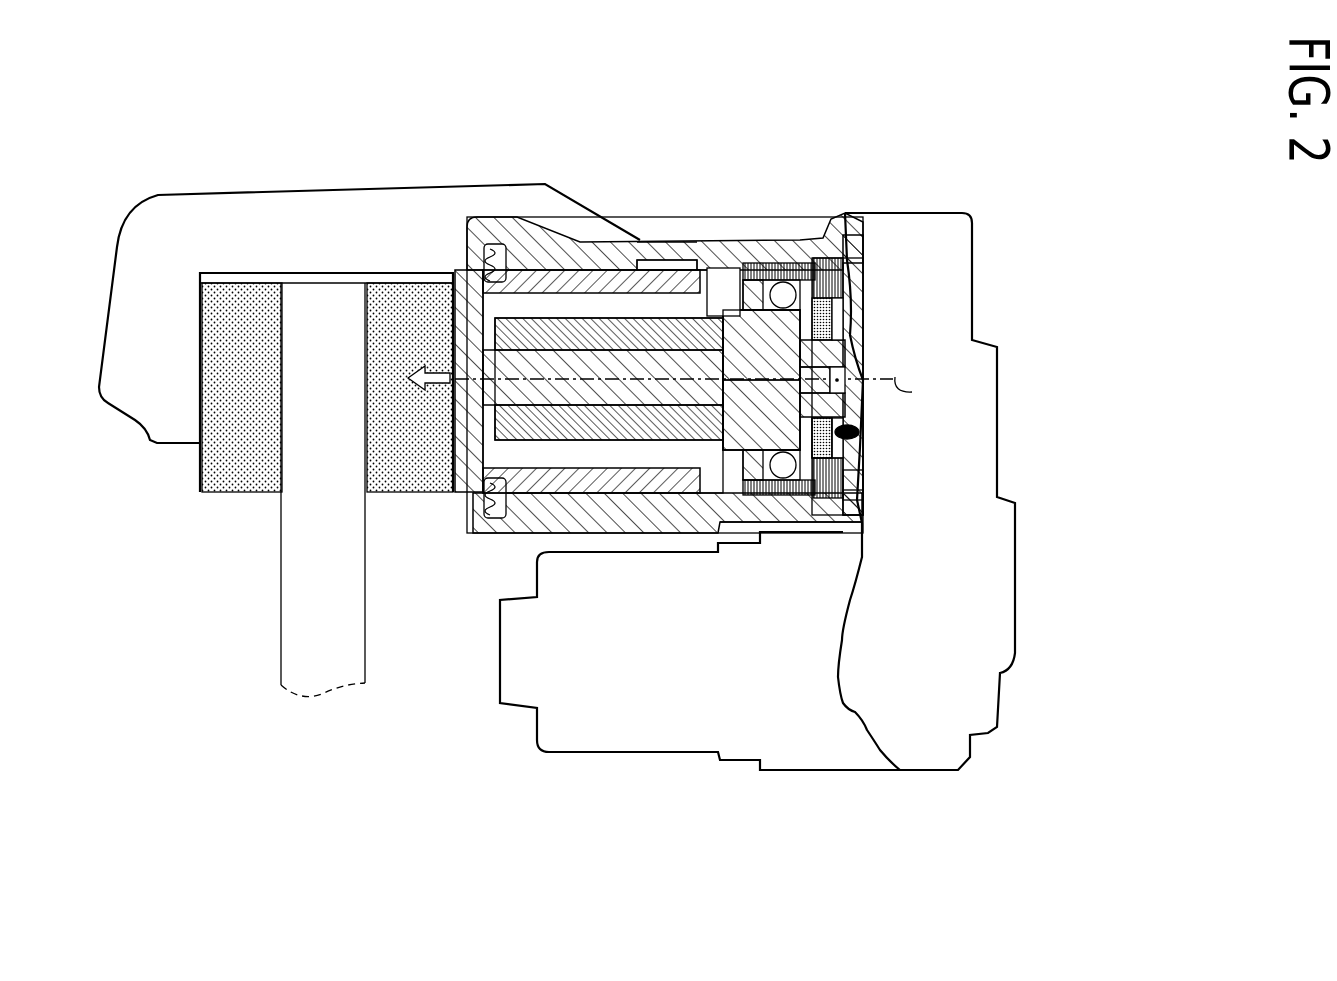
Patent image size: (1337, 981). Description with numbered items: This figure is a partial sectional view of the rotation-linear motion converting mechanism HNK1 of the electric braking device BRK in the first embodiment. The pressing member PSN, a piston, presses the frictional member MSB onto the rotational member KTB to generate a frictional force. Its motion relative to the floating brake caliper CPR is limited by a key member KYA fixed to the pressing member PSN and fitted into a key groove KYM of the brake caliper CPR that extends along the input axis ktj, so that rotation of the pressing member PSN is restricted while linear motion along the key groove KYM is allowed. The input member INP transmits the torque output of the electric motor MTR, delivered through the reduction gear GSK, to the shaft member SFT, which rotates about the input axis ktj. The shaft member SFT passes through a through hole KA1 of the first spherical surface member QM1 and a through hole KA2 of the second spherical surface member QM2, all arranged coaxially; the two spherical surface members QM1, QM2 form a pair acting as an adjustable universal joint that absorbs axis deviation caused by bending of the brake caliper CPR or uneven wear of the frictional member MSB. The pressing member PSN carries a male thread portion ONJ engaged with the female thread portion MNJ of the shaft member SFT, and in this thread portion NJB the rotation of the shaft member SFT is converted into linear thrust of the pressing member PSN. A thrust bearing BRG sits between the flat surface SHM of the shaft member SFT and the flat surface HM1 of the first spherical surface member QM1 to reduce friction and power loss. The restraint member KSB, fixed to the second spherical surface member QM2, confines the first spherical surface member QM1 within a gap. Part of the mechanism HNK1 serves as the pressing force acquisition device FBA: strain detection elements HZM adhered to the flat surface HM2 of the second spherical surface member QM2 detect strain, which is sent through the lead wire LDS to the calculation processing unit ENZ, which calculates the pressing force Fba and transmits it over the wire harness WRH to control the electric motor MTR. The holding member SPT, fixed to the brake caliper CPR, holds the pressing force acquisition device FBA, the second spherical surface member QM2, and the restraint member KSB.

The electric braking device BRK is at (256, 120).
The frictional member MSB is at (240, 307).
The rotational member KTB is at (312, 559).
The pressing force Fba is at (428, 383).
The brake caliper CPR is at (525, 233).
The holding member SPT is at (855, 290).
The pressing member PSN is at (460, 290).
The female thread portion MNJ is at (483, 447).
The shaft member SFT is at (699, 322).
The male thread portion ONJ is at (500, 402).
The thread portion NJB is at (373, 553).
The input member INP is at (863, 428).
The restraint member KSB is at (728, 298).
The key groove KYM is at (650, 242).
The key member KYA is at (678, 242).
The bearing BRG is at (784, 263).
The through hole of second spherical surface member KA2 is at (762, 418).
The through hole of first spherical surface member KA1 is at (745, 478).
The flat surface of shaft member SHM is at (735, 515).
The first spherical surface member QM1 is at (818, 268).
The flat surface of first spherical surface member HM1 is at (792, 298).
The flat surface of second spherical surface member HM2 is at (808, 295).
The second spherical surface member QM2 is at (860, 347).
The wire harness WRH is at (858, 430).
The calculation processing unit ENZ is at (836, 447).
The lead wire LDS is at (860, 487).
The strain detection element HZM is at (856, 503).
The pressing force acquisition device FBA is at (1078, 572).
The input axis ktj is at (920, 392).
The rotation-linear motion converting mechanism HNK1 is at (740, 128).
The reduction gear GSK is at (963, 662).
The electric motor MTR is at (613, 717).